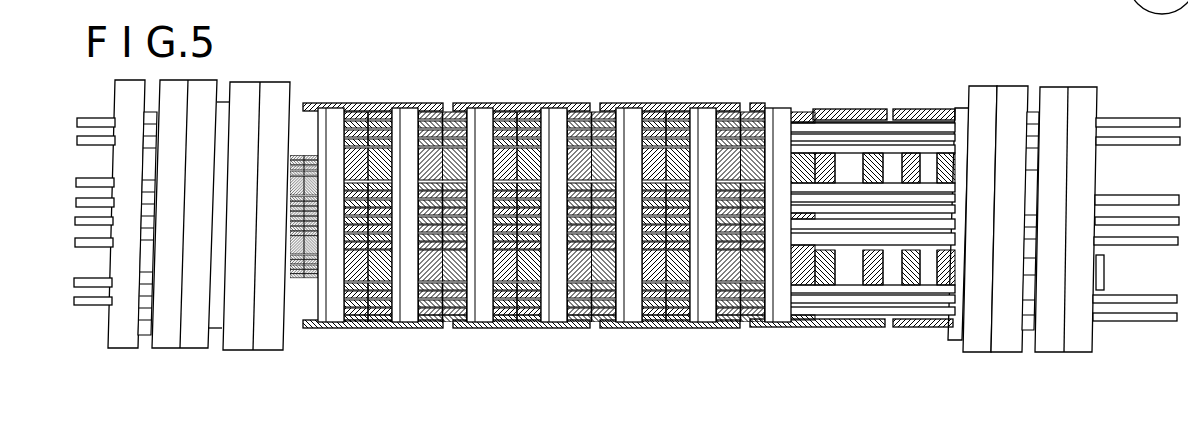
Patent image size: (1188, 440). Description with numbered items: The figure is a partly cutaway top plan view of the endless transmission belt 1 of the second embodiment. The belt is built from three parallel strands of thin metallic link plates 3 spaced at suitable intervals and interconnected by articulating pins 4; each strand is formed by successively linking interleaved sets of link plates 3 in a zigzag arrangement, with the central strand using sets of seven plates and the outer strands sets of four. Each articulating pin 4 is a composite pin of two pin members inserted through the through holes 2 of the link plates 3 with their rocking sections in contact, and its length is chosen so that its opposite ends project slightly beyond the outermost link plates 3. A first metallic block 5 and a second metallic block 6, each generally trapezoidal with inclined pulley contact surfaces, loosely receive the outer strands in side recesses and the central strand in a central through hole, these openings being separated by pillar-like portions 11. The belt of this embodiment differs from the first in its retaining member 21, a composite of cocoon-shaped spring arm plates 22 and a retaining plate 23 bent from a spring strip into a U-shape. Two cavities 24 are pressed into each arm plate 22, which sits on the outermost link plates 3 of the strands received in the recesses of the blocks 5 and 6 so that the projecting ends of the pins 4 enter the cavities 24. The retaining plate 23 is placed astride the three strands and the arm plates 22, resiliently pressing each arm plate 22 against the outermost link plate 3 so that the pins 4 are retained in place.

The endless transmission belt 1 is at (625, 213).
The through hole 2 is at (415, 112).
The link plate 3 is at (513, 110).
The articulating pin 4 is at (623, 116).
The first metallic block 5 is at (1017, 80).
The second metallic block 6 is at (984, 80).
The pillar-like portion 11 is at (533, 163).
The retaining member 21 is at (958, 100).
The arm plate 22 is at (500, 108).
The retaining plate 23 is at (524, 110).
The cavity 24 is at (700, 110).